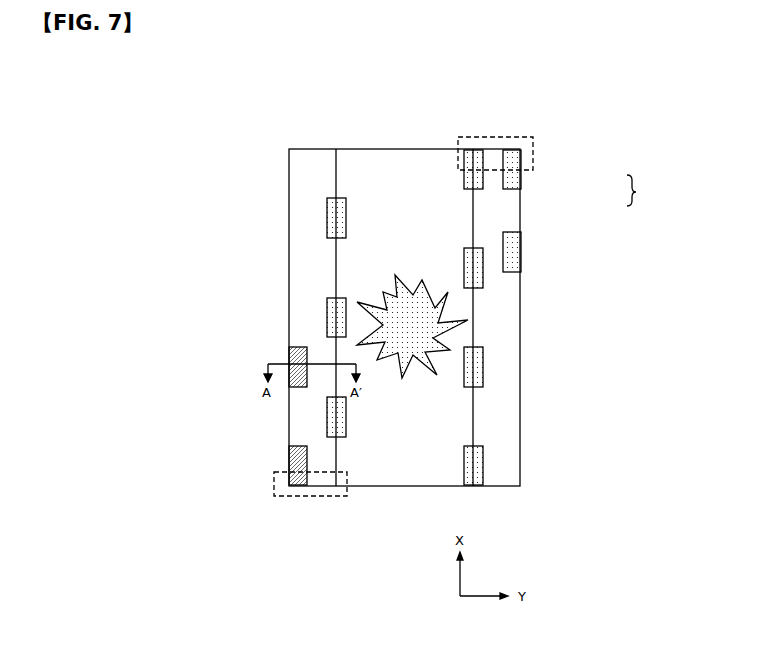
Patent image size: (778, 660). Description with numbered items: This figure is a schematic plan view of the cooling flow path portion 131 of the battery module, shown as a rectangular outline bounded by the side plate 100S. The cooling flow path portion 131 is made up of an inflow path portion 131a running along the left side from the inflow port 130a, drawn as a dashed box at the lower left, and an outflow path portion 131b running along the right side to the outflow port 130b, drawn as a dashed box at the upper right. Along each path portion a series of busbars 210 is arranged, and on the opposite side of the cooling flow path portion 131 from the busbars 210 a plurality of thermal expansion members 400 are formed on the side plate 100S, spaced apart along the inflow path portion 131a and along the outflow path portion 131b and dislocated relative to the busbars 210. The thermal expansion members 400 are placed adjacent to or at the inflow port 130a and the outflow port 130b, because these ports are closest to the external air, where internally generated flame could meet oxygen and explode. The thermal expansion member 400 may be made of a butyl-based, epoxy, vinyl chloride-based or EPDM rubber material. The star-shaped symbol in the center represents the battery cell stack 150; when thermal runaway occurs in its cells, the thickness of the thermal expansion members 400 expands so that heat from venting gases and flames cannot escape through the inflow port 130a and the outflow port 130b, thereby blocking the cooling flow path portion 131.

The side plate 100S is at (289, 430).
The inflow path portion 131a is at (309, 271).
The outflow path portion 131b is at (497, 319).
The cooling flow path portion 131 is at (626, 189).
The busbar 210 is at (333, 217).
The thermal expansion member 400 is at (289, 355).
The inflow port 130a is at (290, 498).
The outflow port 130b is at (505, 137).
The battery cell stack 150 is at (402, 452).